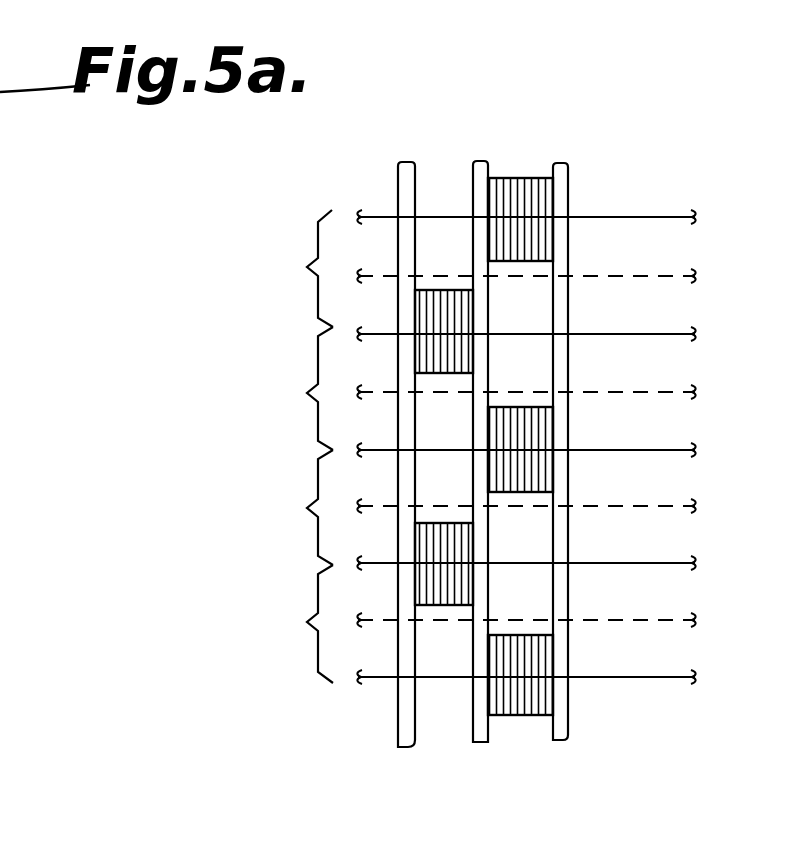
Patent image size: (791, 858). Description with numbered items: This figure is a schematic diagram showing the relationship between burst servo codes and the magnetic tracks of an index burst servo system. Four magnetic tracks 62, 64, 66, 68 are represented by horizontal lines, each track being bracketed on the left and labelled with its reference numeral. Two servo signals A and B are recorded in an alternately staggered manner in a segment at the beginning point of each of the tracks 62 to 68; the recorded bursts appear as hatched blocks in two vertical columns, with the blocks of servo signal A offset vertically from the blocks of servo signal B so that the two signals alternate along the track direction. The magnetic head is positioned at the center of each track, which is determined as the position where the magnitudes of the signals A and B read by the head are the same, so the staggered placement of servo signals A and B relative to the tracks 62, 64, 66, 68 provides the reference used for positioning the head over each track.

The track 62 is at (307, 267).
The track 64 is at (307, 393).
The track 66 is at (307, 508).
The track 68 is at (307, 622).
The servo signal A is at (442, 184).
The servo signal B is at (524, 178).